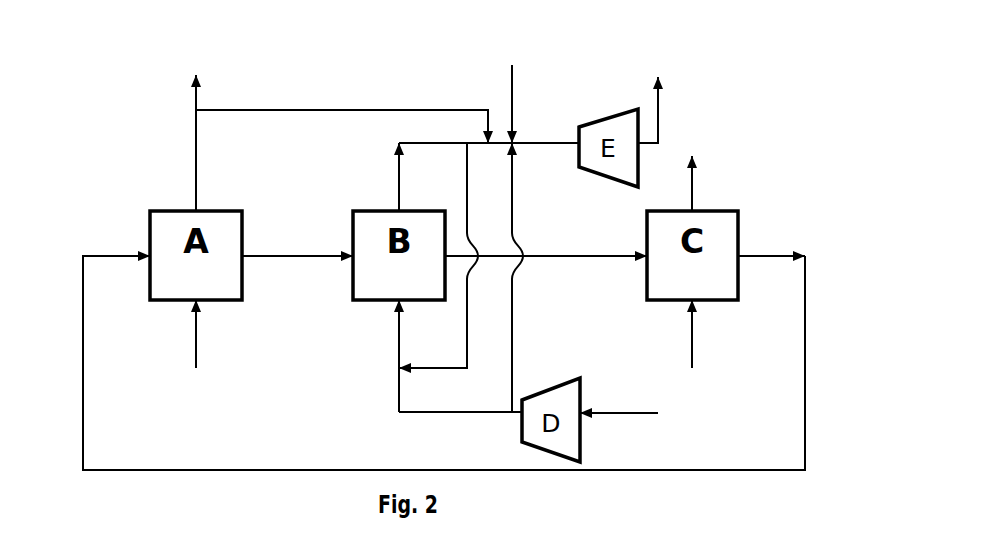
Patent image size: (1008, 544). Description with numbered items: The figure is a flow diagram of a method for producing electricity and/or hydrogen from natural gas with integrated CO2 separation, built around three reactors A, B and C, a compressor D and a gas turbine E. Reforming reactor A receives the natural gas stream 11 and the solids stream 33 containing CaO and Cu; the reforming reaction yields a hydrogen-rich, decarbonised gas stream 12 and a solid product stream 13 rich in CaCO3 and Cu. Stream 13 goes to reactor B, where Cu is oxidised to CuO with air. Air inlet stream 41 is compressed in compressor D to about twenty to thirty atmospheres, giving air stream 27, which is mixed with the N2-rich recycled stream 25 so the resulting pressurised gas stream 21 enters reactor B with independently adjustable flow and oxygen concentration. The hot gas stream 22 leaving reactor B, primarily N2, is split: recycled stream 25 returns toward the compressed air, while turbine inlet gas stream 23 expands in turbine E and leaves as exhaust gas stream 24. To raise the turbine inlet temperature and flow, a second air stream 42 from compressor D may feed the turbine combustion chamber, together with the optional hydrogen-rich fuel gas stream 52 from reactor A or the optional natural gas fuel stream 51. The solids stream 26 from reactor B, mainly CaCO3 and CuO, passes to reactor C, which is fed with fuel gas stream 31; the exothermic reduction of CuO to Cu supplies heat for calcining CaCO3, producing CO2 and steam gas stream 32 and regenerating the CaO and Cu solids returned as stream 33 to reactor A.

The natural gas stream 11 is at (181, 334).
The gas stream 12 is at (181, 143).
The solid product stream 13 is at (297, 243).
The pressurised gas stream 21 is at (384, 356).
The hot gas stream 22 is at (384, 177).
The turbine inlet gas stream 23 is at (489, 160).
The turbine exhaust gas stream 24 is at (663, 110).
The recycled stream 25 is at (438, 255).
The solids stream 26 is at (546, 243).
The air stream 27 is at (460, 401).
The fuel gas stream 31 is at (678, 334).
The CO2 and steam gas stream 32 is at (677, 183).
The solids stream 33 is at (444, 350).
The air inlet stream 41 is at (619, 401).
The second air stream 42 is at (527, 277).
The natural gas fuel stream 51 is at (557, 92).
The hydrogen-rich fuel gas stream 52 is at (342, 113).